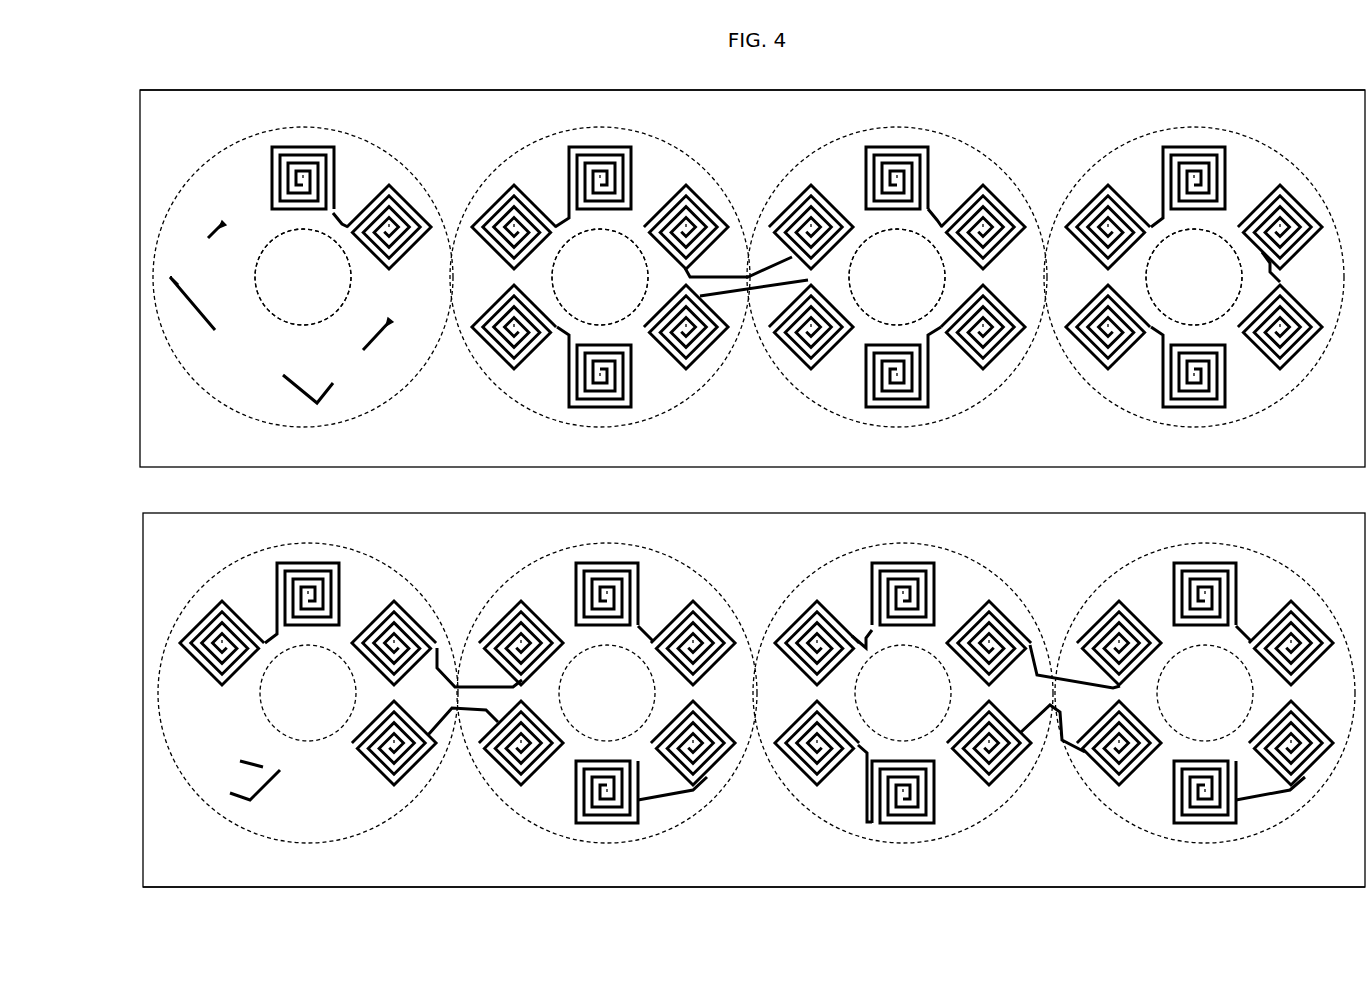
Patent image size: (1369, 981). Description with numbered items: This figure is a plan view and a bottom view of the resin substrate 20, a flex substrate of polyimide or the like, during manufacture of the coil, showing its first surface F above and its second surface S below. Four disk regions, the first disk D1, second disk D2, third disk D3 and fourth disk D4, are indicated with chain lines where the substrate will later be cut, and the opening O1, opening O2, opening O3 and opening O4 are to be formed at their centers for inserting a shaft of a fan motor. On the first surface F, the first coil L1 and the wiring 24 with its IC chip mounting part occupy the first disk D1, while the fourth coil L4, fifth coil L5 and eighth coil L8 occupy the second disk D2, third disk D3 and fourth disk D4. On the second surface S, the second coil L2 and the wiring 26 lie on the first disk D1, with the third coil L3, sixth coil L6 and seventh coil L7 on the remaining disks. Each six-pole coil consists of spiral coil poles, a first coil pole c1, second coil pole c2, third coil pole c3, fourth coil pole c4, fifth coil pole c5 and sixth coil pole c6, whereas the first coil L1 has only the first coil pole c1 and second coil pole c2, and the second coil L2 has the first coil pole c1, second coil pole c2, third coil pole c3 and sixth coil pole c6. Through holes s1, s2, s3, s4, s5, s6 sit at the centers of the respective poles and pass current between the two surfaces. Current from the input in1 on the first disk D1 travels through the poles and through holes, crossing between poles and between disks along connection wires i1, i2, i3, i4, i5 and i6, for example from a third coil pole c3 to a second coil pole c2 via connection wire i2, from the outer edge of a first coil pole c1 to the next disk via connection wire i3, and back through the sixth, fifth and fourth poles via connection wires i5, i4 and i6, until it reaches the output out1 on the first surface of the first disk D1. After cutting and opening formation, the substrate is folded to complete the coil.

The resin substrate 20 is at (186, 91).
The first surface F is at (497, 90).
The second surface S is at (514, 886).
The wiring 24 is at (251, 360).
The wiring 26 is at (188, 780).
The first disk D1 is at (305, 492).
The second disk D2 is at (603, 506).
The third disk D3 is at (900, 491).
The fourth disk D4 is at (1199, 491).
The first coil L1 is at (303, 277).
The second coil L2 is at (308, 693).
The third coil L3 is at (607, 693).
The fourth coil L4 is at (600, 277).
The fifth coil L5 is at (897, 277).
The sixth coil L6 is at (903, 693).
The seventh coil L7 is at (1205, 693).
The eighth coil L8 is at (1194, 277).
The opening O1 is at (303, 277).
The opening O2 is at (600, 277).
The opening O3 is at (897, 277).
The opening O4 is at (1194, 277).
The first coil pole c1 is at (844, 415).
The second coil pole c2 is at (754, 359).
The third coil pole c3 is at (669, 415).
The fourth coil pole c4 is at (809, 553).
The fifth coil pole c5 is at (915, 607).
The sixth coil pole c6 is at (849, 553).
The through hole s1 is at (873, 406).
The through hole s2 is at (786, 350).
The through hole s3 is at (638, 406).
The through hole s4 is at (783, 566).
The through hole s5 is at (871, 620).
The through hole s6 is at (880, 563).
The connection wire i1 is at (700, 277).
The connection wire i2 is at (606, 433).
The connection wire i3 is at (814, 459).
The connection wire i4 is at (752, 288).
The connection wire i5 is at (931, 549).
The connection wire i6 is at (748, 539).
The input in1 is at (215, 219).
The output out1 is at (395, 319).